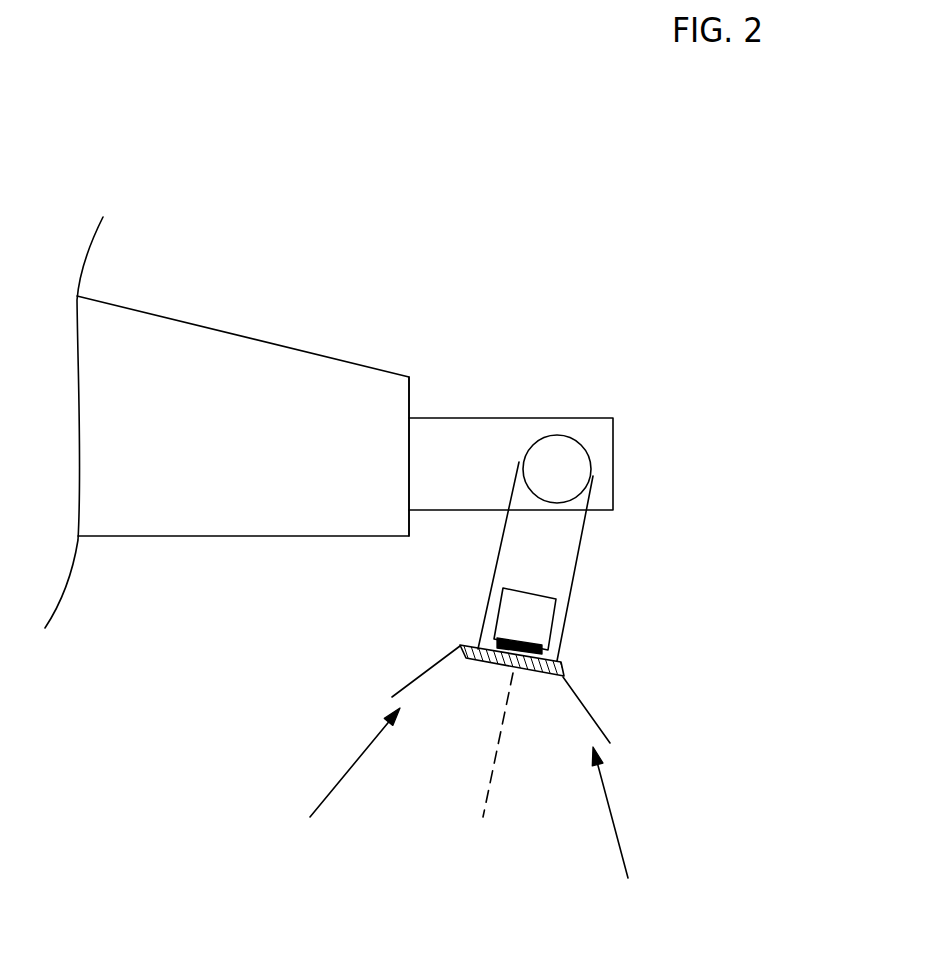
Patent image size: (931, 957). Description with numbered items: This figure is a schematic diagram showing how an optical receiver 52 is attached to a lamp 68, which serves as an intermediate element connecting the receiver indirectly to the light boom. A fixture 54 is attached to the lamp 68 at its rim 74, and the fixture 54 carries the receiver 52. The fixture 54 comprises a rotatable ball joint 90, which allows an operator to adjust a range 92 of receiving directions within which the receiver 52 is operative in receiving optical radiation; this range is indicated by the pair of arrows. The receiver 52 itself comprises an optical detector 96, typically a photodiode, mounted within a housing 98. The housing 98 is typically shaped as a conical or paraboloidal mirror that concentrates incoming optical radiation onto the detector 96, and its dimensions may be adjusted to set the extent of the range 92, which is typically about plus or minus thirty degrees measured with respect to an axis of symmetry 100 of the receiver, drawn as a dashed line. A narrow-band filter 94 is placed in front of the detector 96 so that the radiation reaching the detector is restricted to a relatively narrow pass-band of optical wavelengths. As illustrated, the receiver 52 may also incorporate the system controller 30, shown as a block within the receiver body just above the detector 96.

The system controller 30 is at (554, 622).
The optical receiver 52 is at (577, 628).
The fixture 54 is at (613, 470).
The lamp 68 is at (222, 332).
The rim 74 is at (410, 397).
The rotatable ball joint 90 is at (577, 435).
The range of receiving directions 92 is at (333, 788).
The narrow-band filter 94 is at (490, 670).
The optical detector 96 is at (543, 653).
The housing 98 is at (423, 677).
The axis of symmetry 100 is at (493, 767).